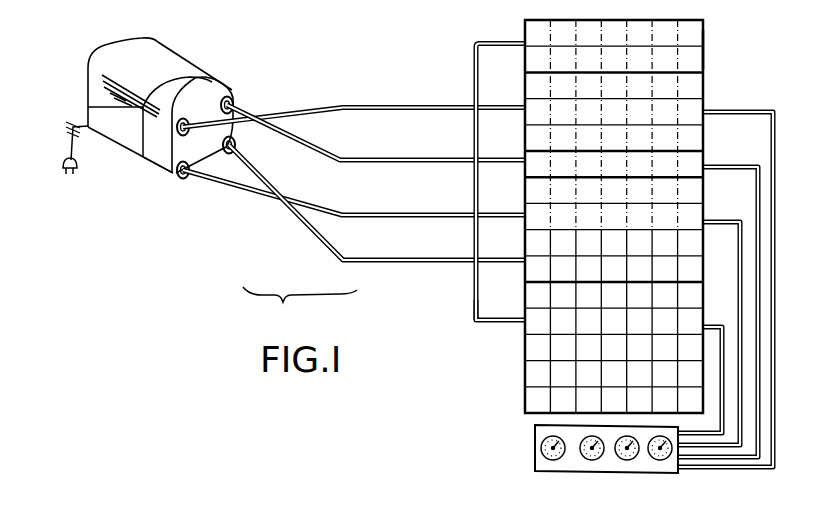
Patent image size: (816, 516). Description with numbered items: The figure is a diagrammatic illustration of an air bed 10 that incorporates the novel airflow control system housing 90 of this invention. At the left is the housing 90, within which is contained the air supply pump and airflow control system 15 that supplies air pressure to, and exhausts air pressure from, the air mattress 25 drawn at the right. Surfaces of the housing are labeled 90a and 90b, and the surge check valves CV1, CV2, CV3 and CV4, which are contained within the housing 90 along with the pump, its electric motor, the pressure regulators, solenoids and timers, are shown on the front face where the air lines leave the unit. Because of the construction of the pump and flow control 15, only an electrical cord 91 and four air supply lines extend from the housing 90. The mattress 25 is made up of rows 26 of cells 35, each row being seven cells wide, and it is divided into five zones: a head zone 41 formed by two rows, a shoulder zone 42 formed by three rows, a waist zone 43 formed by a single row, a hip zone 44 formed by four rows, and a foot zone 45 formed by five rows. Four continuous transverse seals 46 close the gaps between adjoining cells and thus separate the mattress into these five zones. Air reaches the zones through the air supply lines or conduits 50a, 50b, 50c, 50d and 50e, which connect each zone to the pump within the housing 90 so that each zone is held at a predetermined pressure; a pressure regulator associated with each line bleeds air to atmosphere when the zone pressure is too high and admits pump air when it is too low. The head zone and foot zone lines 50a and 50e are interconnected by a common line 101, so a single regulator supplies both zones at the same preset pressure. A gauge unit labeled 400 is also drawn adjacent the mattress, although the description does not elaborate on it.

The air bed 10 is at (283, 304).
The air supply pump and airflow control system 15 is at (157, 142).
The air mattress 25 is at (492, 366).
The rows 26 is at (713, 28).
The cells 35 is at (697, 60).
The head zone 41 is at (516, 29).
The shoulder zone 42 is at (516, 129).
The waist zone 43 is at (516, 175).
The hip zone 44 is at (516, 234).
The foot zone 45 is at (516, 304).
The transverse seals 46 is at (700, 82).
The air supply line 50a is at (486, 48).
The air supply line 50b is at (418, 88).
The air supply line 50c is at (428, 157).
The air supply line 50d is at (439, 213).
The air supply line 50e is at (484, 323).
The airflow control system housing 90 is at (142, 105).
The housing front panel 90a is at (157, 156).
The housing vent 90b is at (98, 60).
The electrical cord 91 is at (67, 146).
The common line 101 is at (418, 264).
The gauge panel 400 is at (544, 476).
The surge check valve CV1 is at (238, 143).
The surge check valve CV2 is at (177, 177).
The surge check valve CV3 is at (233, 98).
The surge check valve CV4 is at (179, 117).